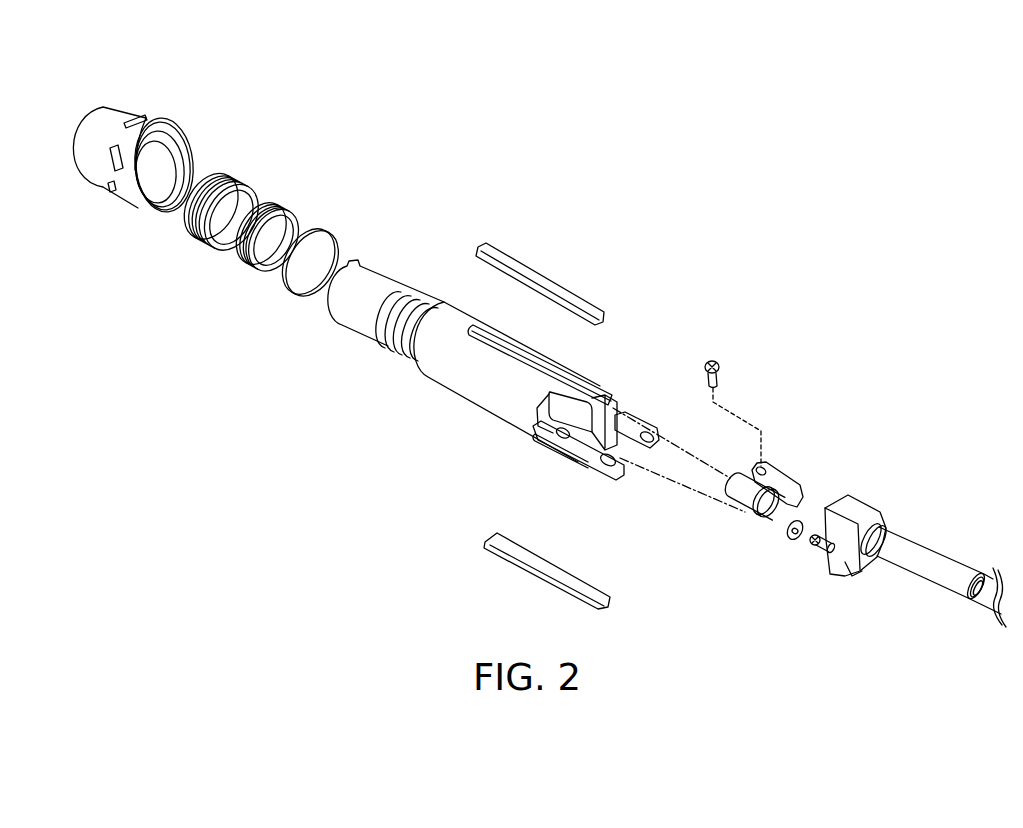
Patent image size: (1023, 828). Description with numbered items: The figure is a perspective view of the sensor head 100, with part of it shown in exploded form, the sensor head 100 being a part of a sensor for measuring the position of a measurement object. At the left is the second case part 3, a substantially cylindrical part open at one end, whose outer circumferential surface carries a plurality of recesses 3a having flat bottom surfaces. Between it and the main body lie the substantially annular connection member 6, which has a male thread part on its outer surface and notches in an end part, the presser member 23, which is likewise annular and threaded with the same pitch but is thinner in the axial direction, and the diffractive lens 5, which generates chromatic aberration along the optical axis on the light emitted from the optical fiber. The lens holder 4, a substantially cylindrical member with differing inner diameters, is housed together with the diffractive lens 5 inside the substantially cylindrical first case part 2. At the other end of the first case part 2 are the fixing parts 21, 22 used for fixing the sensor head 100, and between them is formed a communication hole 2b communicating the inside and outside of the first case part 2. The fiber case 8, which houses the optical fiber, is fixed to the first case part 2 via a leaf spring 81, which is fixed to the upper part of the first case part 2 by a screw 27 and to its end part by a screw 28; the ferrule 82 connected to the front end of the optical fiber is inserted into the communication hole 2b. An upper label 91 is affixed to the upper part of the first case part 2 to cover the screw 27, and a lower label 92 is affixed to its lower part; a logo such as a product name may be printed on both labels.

The sensor head 100 is at (507, 157).
The second case part 3 is at (118, 210).
The recesses 3a is at (141, 121).
The connection member 6 is at (190, 240).
The presser member 23 is at (243, 270).
The diffractive lens 5 is at (291, 297).
The lens holder 4 is at (353, 328).
The first case part 2 is at (461, 404).
The communication hole 2b is at (618, 415).
The fixing part 21 is at (588, 460).
The fixing part 22 is at (638, 424).
The upper label 91 is at (546, 274).
The lower label 92 is at (548, 586).
The screw 27 is at (722, 363).
The leaf spring 81 is at (777, 477).
The ferrule 82 is at (748, 502).
The screw 28 is at (808, 548).
The fiber case 8 is at (933, 545).